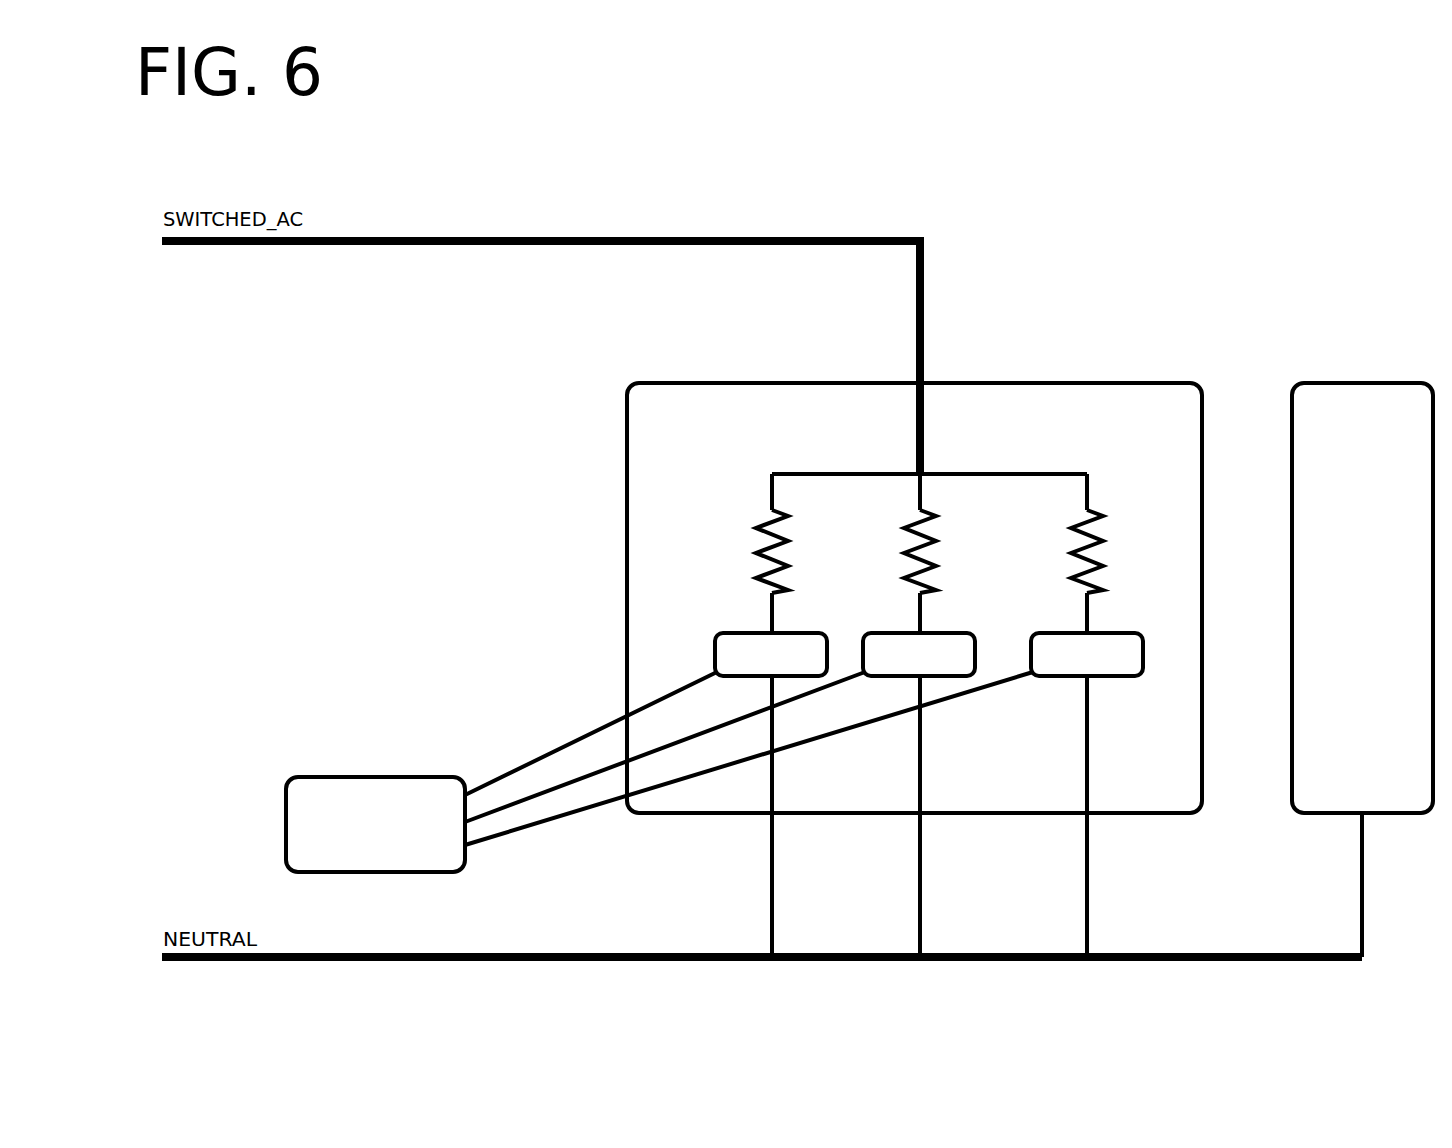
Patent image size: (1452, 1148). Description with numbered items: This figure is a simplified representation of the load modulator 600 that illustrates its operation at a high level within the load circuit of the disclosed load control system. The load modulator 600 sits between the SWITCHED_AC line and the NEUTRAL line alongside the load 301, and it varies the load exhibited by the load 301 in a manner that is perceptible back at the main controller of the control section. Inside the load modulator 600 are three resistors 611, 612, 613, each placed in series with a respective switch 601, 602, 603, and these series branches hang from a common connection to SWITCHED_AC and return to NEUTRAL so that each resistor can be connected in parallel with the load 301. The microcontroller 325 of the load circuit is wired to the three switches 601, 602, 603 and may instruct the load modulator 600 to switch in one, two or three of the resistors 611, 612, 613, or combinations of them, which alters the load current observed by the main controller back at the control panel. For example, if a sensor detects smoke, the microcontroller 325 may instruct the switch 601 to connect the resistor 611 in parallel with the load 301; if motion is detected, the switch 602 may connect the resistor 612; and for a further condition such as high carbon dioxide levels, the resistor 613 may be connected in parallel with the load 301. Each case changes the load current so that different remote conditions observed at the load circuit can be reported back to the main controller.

The load modulator 600 is at (706, 382).
The switch 601 is at (750, 632).
The switch 602 is at (899, 632).
The switch 603 is at (1065, 632).
The resistor 611 is at (762, 545).
The resistor 612 is at (910, 545).
The resistor 613 is at (1077, 545).
The microcontroller 325 is at (350, 776).
The load 301 is at (1331, 382).